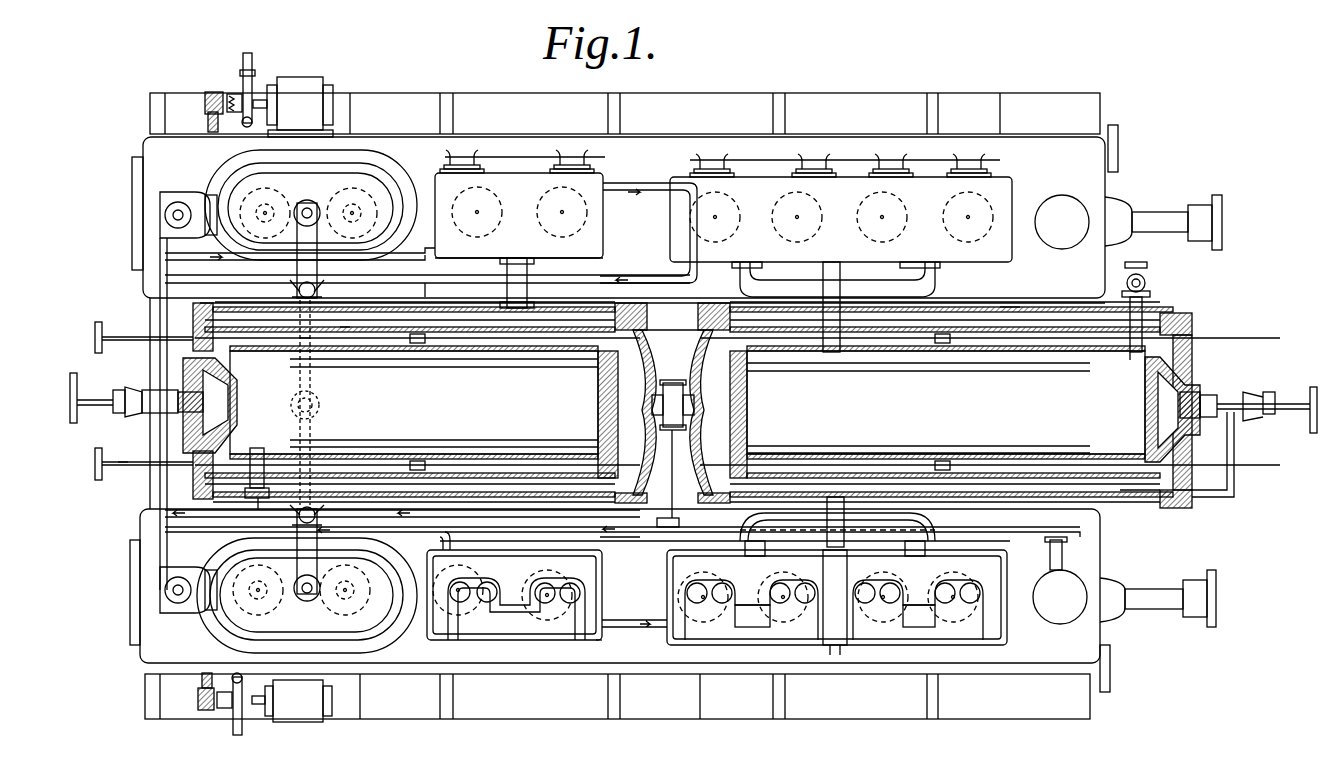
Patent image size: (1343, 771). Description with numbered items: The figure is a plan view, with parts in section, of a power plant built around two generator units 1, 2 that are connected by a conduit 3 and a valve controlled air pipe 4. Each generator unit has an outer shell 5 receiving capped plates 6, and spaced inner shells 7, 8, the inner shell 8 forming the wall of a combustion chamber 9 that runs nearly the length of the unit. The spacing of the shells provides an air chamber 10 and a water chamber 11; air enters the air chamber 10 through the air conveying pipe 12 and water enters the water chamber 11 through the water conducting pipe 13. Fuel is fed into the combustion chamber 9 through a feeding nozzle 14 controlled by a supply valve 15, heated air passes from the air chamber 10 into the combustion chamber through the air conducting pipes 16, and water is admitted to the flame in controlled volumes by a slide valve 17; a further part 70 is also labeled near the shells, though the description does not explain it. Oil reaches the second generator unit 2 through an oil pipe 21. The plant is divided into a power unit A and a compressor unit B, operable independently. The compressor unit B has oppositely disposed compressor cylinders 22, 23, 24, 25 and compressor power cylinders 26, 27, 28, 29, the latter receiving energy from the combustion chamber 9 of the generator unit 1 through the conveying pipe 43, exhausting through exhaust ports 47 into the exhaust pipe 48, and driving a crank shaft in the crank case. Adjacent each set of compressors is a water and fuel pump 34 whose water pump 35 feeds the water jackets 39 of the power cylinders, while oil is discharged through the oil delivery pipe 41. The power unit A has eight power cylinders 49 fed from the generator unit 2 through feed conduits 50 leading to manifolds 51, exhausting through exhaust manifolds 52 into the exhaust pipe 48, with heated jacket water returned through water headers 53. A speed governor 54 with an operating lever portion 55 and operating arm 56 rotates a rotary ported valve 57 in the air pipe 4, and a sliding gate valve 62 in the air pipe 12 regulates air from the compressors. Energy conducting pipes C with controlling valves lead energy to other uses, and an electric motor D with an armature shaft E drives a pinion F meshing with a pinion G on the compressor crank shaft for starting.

The generator unit 1 is at (470, 297).
The generator unit 2 is at (1012, 312).
The conduit 3 is at (670, 335).
The valve controlled air pipe 4 is at (650, 405).
The outer shell 5 is at (565, 310).
The capped plates 6 is at (193, 315).
The inner shell 7 is at (490, 332).
The inner shell 8 is at (575, 352).
The combustion chamber 9 is at (687, 402).
The air chamber 10 is at (1130, 497).
The water chamber 11 is at (385, 338).
The air conveying pipe 12 is at (312, 422).
The water conducting pipe 13 is at (150, 335).
The feeding nozzle 14 is at (160, 413).
The supply valve 15 is at (122, 390).
The air conducting pipes 16 is at (420, 368).
The slide valve 17 is at (410, 343).
The oil pipe 21 is at (1236, 455).
The compressor cylinder 22 is at (258, 590).
The compressor cylinder 23 is at (345, 590).
The compressor cylinder 24 is at (265, 213).
The compressor cylinder 25 is at (352, 213).
The compressor power cylinder 26 is at (458, 586).
The compressor power cylinder 27 is at (549, 588).
The compressor power cylinder 28 is at (477, 212).
The compressor power cylinder 29 is at (562, 212).
The water and fuel pump 34 is at (172, 200).
The water pump 35 is at (165, 240).
The water jackets 39 is at (519, 218).
The oil delivery pipe 41 is at (128, 465).
The conveying pipe 43 is at (520, 292).
The exhaust ports 47 is at (583, 615).
The exhaust pipe 48 is at (1028, 134).
The power cylinders 49 is at (841, 217).
The feed conduits 50 is at (835, 440).
The manifolds 51 is at (835, 285).
The exhaust manifolds 52 is at (665, 632).
The water headers 53 is at (402, 516).
The speed governor 54 is at (1067, 553).
The operating lever portion 55 is at (998, 537).
The operating arm 56 is at (656, 525).
The rotary ported valve 57 is at (662, 478).
The sliding gate valve 62 is at (298, 290).
The rod 70 is at (345, 332).
The power unit A is at (841, 208).
The compressor unit B is at (438, 180).
The energy conducting pipes C is at (1142, 310).
The electric motor D is at (295, 77).
The armature shaft E is at (258, 85).
The pinion F is at (214, 92).
The pinion G is at (212, 130).